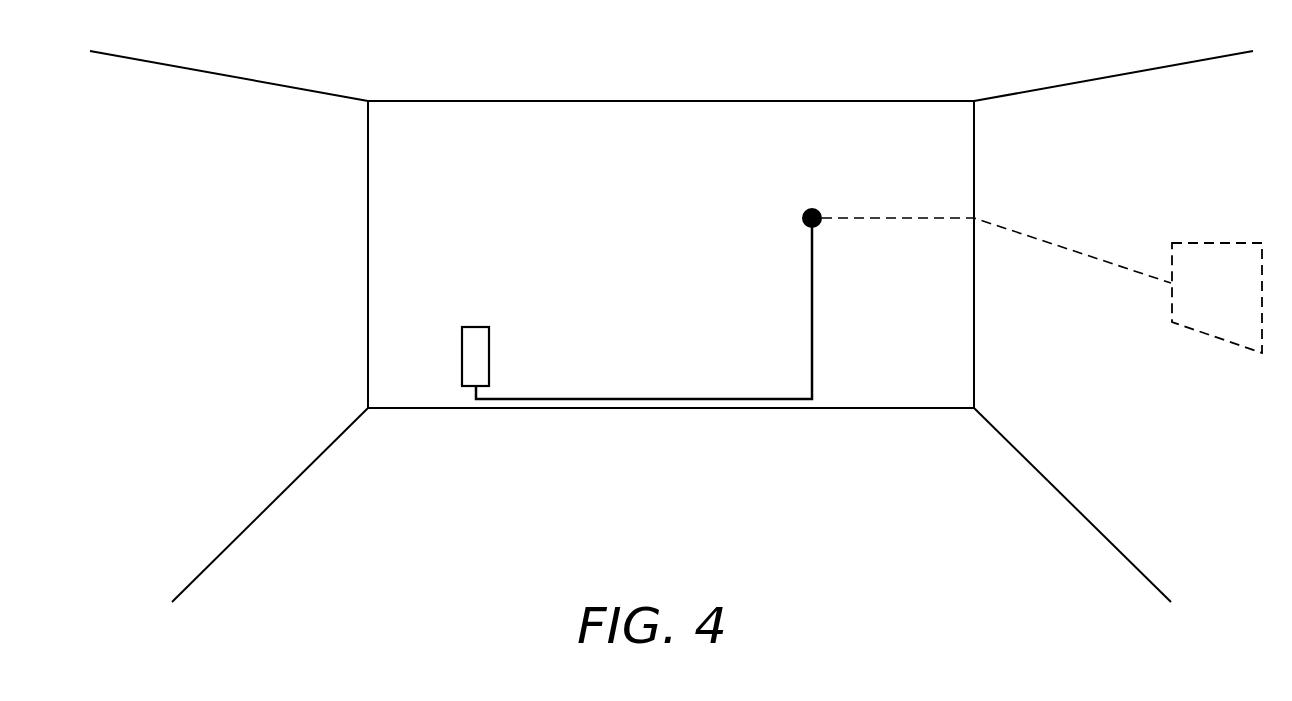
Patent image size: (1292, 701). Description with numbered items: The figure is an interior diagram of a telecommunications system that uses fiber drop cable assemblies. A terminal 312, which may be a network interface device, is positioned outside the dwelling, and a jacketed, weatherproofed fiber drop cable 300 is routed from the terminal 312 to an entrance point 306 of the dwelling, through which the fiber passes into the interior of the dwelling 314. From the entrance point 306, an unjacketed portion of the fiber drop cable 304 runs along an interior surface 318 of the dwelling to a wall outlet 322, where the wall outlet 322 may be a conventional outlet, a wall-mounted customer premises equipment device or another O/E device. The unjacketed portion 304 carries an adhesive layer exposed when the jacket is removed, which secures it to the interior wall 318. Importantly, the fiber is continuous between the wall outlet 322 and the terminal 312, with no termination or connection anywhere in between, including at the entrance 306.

The fiber drop cable 300 is at (906, 217).
The unjacketed portion of the fiber drop cable 304 is at (672, 399).
The entrance point 306 is at (802, 220).
The terminal 312 is at (1208, 243).
The interior of the dwelling 314 is at (450, 499).
The interior surface 318 is at (610, 230).
The wall outlet 322 is at (480, 344).